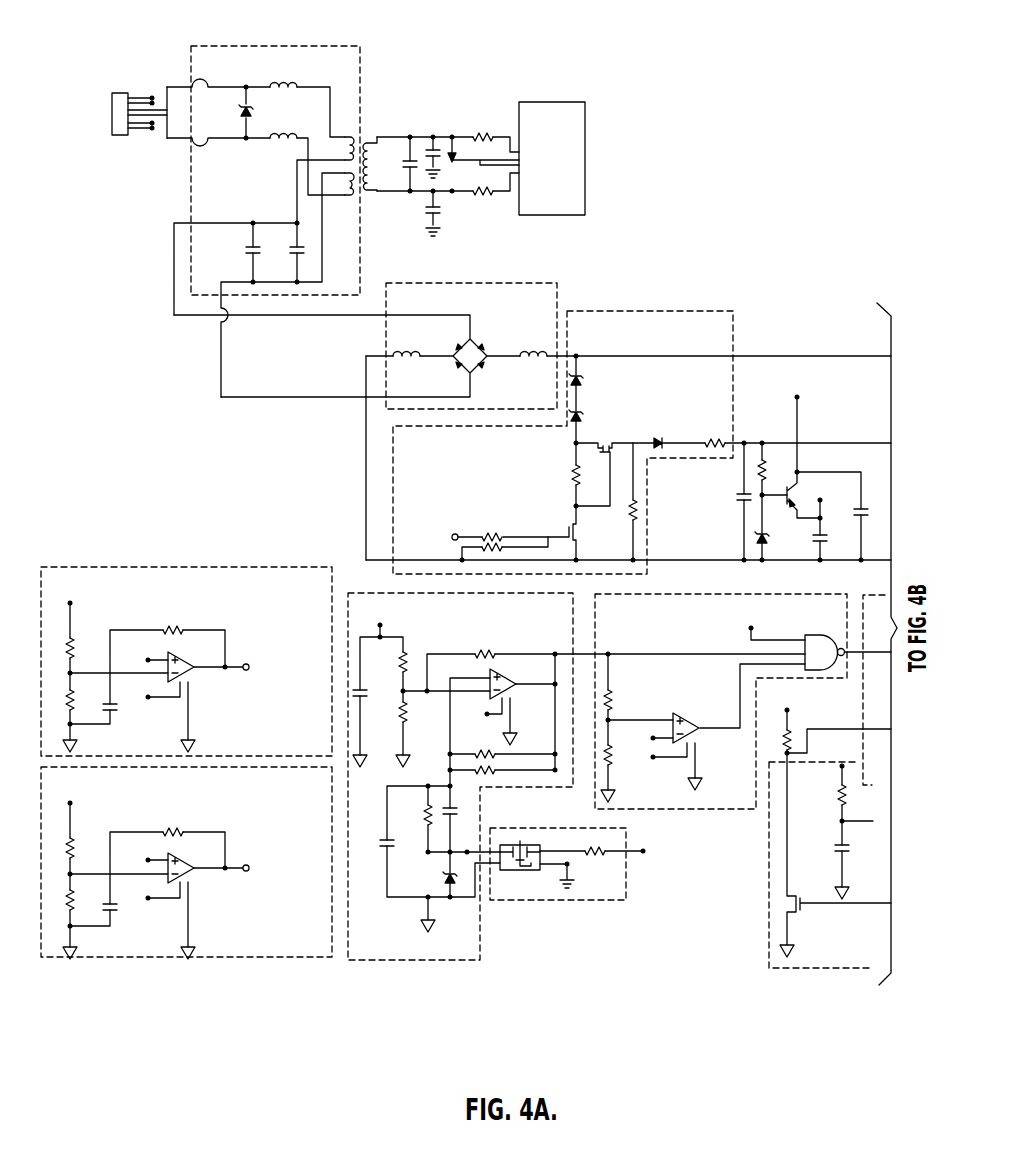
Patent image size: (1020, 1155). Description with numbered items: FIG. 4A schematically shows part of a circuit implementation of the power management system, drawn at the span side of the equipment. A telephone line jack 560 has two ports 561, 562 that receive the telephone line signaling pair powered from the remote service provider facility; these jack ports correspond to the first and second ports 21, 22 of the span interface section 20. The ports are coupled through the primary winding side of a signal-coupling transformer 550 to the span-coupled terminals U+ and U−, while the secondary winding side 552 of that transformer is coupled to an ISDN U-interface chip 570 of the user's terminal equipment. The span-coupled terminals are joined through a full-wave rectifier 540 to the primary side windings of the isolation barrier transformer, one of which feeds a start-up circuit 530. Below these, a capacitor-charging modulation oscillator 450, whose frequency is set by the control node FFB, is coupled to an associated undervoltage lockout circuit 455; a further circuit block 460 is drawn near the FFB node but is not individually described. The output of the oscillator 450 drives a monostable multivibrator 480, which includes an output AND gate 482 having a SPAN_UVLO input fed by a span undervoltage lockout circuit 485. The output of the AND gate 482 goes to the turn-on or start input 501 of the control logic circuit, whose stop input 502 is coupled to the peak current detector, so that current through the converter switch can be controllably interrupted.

The span interface section 20 is at (362, 62).
The first port 21 is at (186, 87).
The second port 22 is at (189, 142).
The telephone line jack 560 is at (121, 140).
The telephone line jack port 561 is at (160, 100).
The telephone line jack port 562 is at (160, 140).
The signal-coupling transformer 550 is at (365, 135).
The secondary winding side 552 is at (378, 195).
The ISDN U-interface chip 570 is at (571, 102).
The full-wave rectifier 540 is at (488, 283).
The start-up circuit 530 is at (663, 311).
The span undervoltage lockout circuit 485 is at (273, 567).
The undervoltage lockout circuit 455 is at (248, 958).
The capacitor-charging modulation oscillator 450 is at (436, 962).
The analog switch 460 is at (598, 902).
The monostable multivibrator 480 is at (690, 594).
The output AND gate 482 is at (826, 635).
The start input 501 is at (853, 648).
The stop input 502 is at (813, 722).